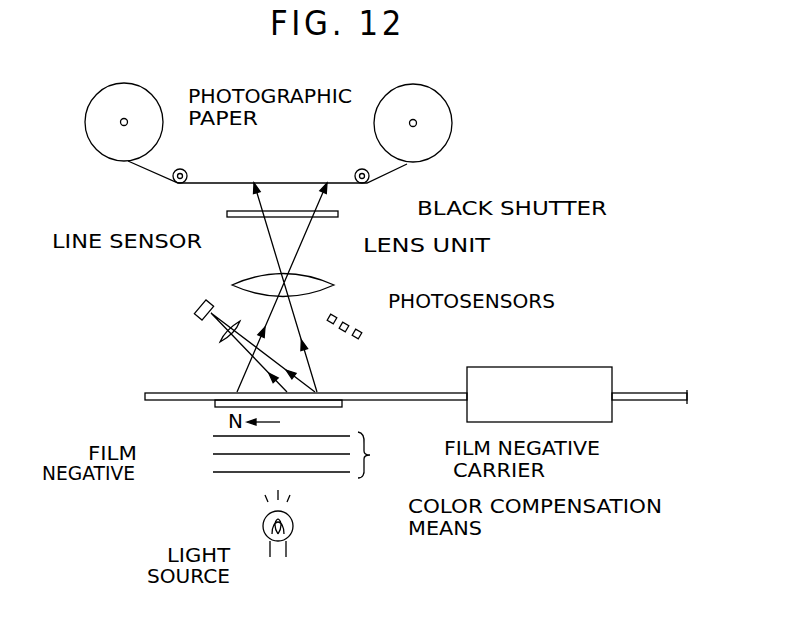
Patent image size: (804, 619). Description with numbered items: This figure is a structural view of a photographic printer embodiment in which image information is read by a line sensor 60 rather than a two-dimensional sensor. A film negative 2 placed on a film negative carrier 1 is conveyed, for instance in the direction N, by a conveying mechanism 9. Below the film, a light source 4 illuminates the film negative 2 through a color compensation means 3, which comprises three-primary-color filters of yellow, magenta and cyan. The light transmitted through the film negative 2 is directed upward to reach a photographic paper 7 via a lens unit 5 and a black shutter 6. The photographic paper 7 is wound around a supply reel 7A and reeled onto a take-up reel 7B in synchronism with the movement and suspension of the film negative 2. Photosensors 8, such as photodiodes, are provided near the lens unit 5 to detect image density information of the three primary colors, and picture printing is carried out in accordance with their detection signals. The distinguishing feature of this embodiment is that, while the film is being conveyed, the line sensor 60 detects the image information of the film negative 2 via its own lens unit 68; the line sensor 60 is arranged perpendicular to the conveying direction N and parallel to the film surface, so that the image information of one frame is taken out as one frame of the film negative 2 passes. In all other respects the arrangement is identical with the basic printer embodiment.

The film negative carrier 1 is at (337, 407).
The film negative 2 is at (167, 400).
The color compensation means 3 is at (370, 455).
The light source 4 is at (263, 525).
The lens unit 5 is at (307, 272).
The black shutter 6 is at (338, 213).
The photographic paper 7 is at (200, 180).
The supply reel 7A is at (87, 110).
The take-up reel 7B is at (452, 118).
The photosensors 8 is at (332, 302).
The conveying mechanism 9 is at (467, 367).
The line sensor 60 is at (203, 305).
The lens unit 68 is at (222, 338).